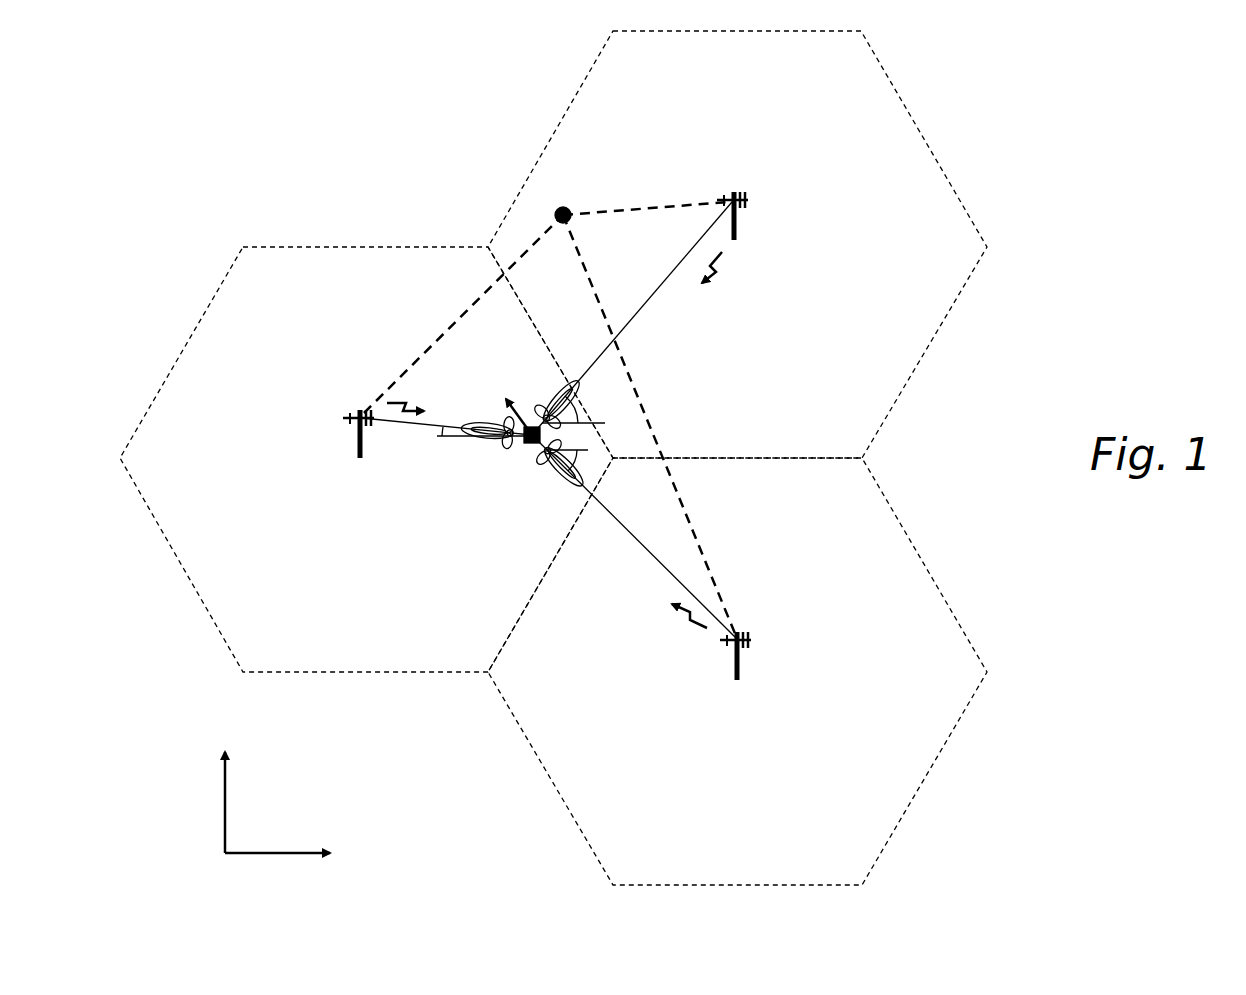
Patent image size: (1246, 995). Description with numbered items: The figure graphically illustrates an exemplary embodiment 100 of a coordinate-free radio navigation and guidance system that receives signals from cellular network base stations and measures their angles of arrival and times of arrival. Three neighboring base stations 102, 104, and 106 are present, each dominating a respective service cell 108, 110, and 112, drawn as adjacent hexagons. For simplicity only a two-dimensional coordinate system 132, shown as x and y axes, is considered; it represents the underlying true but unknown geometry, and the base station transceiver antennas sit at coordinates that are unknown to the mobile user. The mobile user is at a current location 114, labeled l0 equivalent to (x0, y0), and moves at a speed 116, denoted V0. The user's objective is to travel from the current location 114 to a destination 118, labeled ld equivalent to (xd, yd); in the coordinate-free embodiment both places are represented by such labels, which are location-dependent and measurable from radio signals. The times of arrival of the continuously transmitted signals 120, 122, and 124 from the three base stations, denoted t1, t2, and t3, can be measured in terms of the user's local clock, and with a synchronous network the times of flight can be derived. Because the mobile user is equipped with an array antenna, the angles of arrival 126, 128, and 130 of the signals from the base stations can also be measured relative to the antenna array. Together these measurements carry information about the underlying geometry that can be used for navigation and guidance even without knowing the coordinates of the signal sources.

The exemplary embodiment 100 is at (250, 148).
The base station 102 is at (348, 398).
The base station 104 is at (748, 624).
The base station 106 is at (734, 184).
The service cell 108 is at (222, 283).
The service cell 110 is at (888, 500).
The service cell 112 is at (593, 66).
The mobile user current location 114 is at (507, 498).
The speed 116 is at (506, 360).
The destination 118 is at (566, 158).
The time of arrival signal 120 is at (417, 390).
The time of arrival signal 122 is at (665, 630).
The time of arrival signal 124 is at (720, 269).
The angle of arrival 126 is at (394, 440).
The angle of arrival 128 is at (617, 470).
The angle of arrival 130 is at (627, 391).
The two-dimensional coordinate system 132 is at (228, 827).